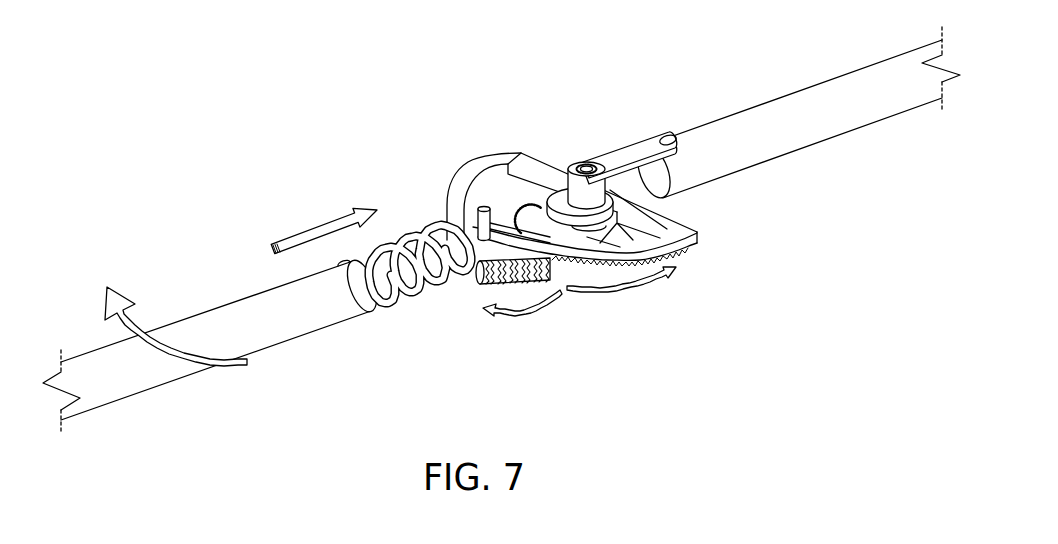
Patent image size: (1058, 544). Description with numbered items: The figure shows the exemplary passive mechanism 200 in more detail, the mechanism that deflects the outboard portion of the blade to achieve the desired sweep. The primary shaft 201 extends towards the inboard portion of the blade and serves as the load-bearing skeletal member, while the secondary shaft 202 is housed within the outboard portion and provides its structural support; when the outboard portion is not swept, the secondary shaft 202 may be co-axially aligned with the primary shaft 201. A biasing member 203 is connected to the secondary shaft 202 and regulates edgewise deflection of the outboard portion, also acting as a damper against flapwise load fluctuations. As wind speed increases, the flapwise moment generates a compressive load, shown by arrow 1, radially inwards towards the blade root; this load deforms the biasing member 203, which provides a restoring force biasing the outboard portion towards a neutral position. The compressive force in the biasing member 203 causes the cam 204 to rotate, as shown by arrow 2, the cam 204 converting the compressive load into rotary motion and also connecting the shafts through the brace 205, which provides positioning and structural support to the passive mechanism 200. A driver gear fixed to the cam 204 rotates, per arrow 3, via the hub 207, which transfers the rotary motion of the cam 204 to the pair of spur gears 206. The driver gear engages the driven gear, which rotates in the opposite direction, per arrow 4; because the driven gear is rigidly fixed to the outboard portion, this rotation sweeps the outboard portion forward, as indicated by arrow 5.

The passive mechanism 200 is at (197, 93).
The primary shaft 201 is at (794, 93).
The secondary shaft 202 is at (218, 312).
The biasing member 203 is at (423, 230).
The cam 204 is at (465, 185).
The brace 205 is at (632, 148).
The spur gears 206 is at (487, 287).
The hub 207 is at (700, 222).
The compressive load arrow 1 is at (324, 225).
The cam rotation arrow 2 is at (514, 220).
The driver gear rotation arrow 3 is at (621, 294).
The driven gear rotation arrow 4 is at (522, 316).
The forward sweep arrow 5 is at (176, 325).